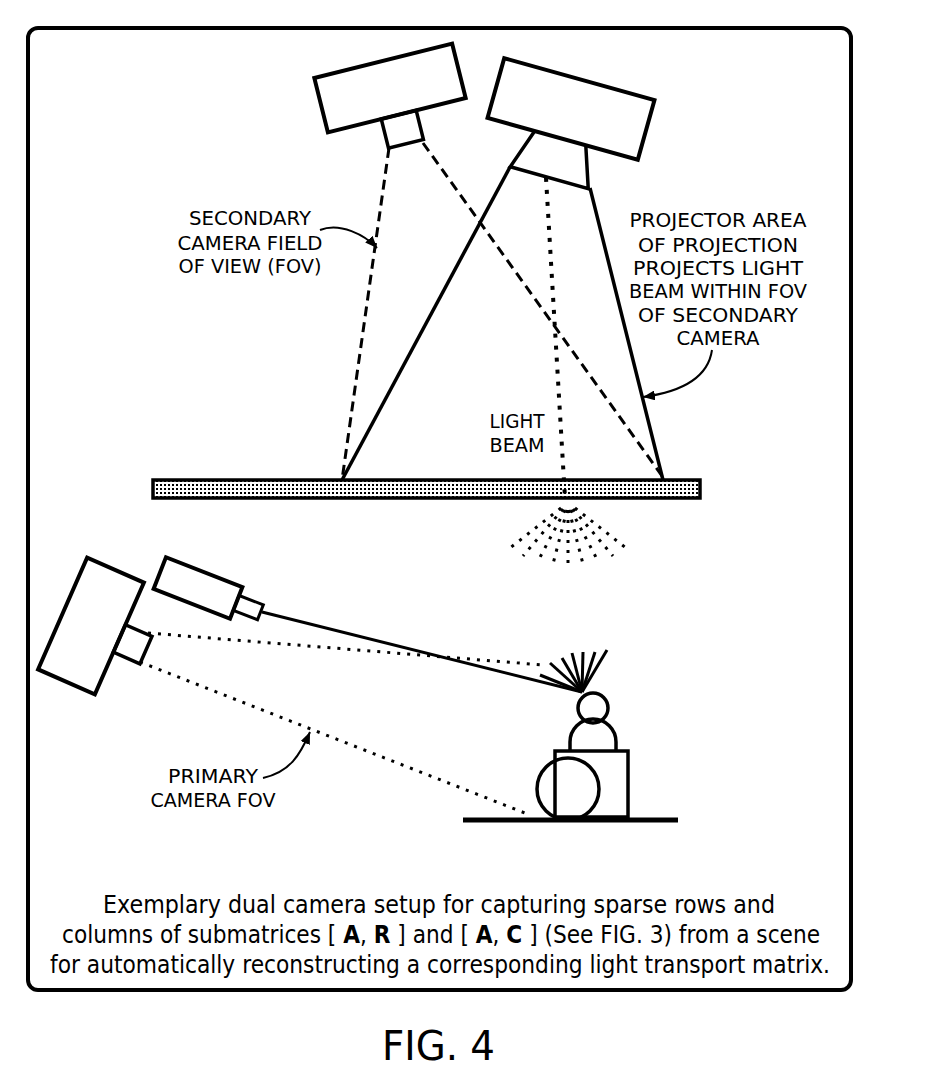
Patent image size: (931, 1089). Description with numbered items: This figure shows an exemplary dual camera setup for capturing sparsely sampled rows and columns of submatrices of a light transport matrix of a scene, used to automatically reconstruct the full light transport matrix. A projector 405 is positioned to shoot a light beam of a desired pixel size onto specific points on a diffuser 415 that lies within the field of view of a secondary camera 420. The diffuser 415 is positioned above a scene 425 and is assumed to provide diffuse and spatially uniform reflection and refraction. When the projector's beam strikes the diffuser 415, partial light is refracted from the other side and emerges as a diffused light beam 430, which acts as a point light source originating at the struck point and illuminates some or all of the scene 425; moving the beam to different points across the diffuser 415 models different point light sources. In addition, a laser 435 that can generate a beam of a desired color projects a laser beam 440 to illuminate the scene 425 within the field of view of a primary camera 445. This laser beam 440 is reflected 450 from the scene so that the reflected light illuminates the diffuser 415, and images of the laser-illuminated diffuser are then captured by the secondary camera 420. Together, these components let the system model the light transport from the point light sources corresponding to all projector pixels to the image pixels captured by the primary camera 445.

The projector 405 is at (650, 115).
The diffuser 415 is at (163, 498).
The secondary camera 420 is at (318, 96).
The scene 425 is at (608, 776).
The diffused light beam 430 is at (466, 555).
The laser 435 is at (210, 574).
The laser beam 440 is at (422, 679).
The primary camera 445 is at (97, 687).
The reflected laser beam 450 is at (684, 640).